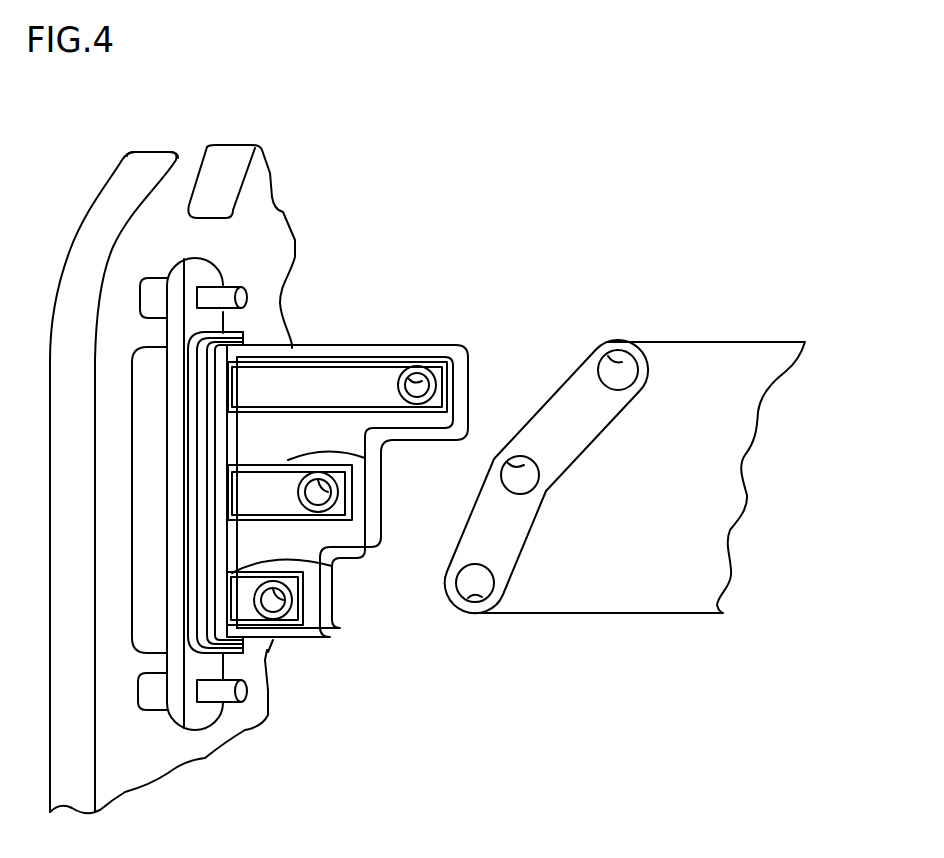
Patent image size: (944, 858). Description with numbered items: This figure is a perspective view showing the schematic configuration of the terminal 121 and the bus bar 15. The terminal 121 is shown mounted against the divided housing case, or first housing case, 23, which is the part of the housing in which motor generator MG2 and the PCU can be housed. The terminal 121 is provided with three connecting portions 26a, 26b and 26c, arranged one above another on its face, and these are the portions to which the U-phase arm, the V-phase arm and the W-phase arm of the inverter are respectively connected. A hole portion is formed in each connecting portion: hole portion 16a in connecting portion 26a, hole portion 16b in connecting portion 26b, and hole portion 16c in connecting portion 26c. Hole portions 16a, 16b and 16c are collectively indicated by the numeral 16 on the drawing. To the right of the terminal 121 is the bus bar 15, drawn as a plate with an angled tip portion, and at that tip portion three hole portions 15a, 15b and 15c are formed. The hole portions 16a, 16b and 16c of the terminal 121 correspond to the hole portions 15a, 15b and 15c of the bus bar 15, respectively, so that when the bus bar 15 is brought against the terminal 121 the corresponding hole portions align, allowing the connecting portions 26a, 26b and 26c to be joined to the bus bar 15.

The terminal 121 is at (461, 163).
The divided housing case (first housing case) 23 is at (150, 150).
The bracket 16 is at (318, 343).
The hole portion 16a is at (417, 378).
The hole portion 16b is at (333, 494).
The hole portion 16c is at (285, 601).
The connecting portion 26a is at (367, 373).
The connecting portion 26b is at (290, 480).
The connecting portion 26c is at (242, 587).
The bus bar 15 is at (712, 358).
The hole portion 15a is at (620, 360).
The hole portion 15b is at (514, 461).
The hole portion 15c is at (481, 597).